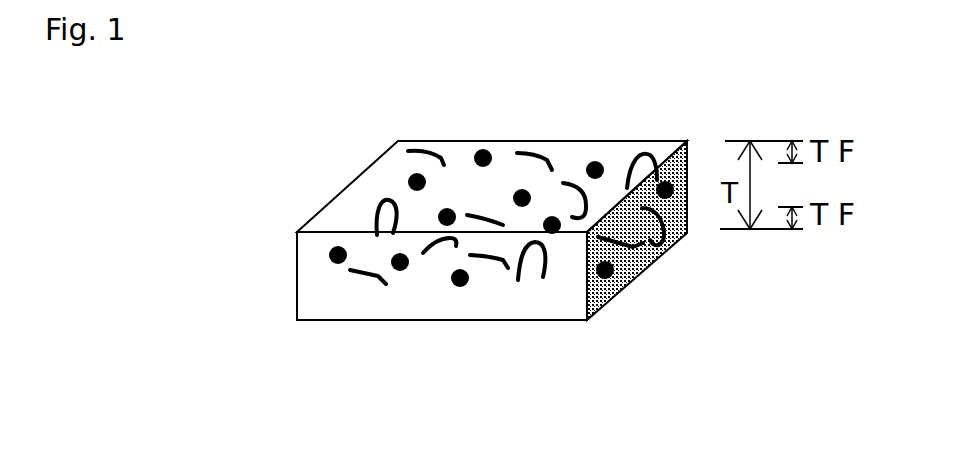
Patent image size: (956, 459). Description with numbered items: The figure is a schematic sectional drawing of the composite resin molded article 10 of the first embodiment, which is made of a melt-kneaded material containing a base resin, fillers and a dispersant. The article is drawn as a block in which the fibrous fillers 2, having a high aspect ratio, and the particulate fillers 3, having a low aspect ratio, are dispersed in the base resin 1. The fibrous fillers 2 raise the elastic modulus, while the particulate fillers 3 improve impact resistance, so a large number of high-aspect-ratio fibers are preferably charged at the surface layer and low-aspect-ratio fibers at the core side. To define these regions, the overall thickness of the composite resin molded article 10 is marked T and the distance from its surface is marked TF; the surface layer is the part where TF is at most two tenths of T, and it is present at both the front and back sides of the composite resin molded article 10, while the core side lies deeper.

The composite resin molded article 10 is at (452, 102).
The base resin 1 is at (560, 305).
The fibrous filler 2 is at (363, 272).
The particulate filler 3 is at (623, 285).